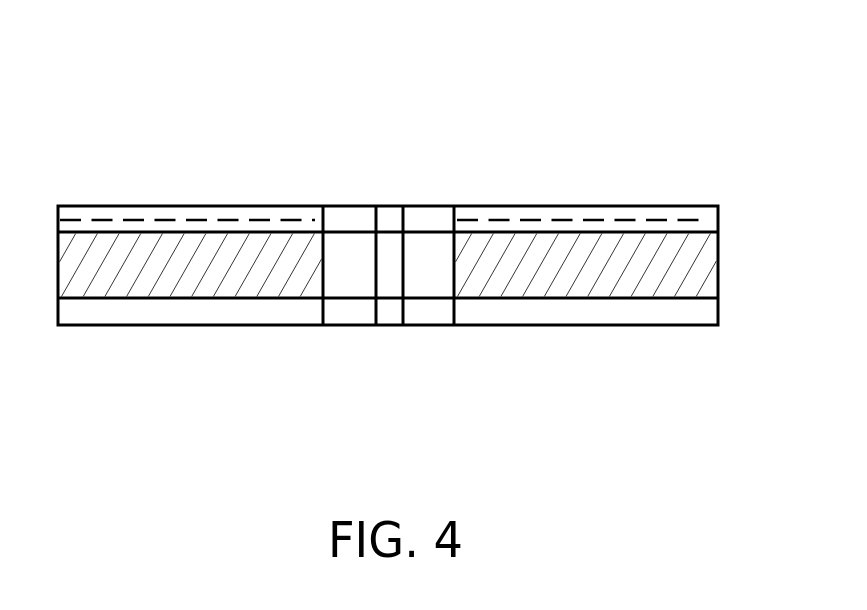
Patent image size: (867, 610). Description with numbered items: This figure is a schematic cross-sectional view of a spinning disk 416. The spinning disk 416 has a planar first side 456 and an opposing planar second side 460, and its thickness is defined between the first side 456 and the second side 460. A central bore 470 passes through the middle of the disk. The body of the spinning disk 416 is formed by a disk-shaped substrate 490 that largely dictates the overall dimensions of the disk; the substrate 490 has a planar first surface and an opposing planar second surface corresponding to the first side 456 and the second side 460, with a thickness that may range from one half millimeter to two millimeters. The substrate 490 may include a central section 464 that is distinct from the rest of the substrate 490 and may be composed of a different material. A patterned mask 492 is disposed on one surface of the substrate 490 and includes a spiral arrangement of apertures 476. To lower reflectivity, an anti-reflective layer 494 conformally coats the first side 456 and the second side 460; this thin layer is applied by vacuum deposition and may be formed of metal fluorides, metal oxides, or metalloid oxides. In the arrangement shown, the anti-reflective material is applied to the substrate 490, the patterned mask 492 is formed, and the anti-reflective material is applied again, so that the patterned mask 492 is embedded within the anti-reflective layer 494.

The spinning disk 416 is at (59, 118).
The first side 456 is at (670, 162).
The second side 460 is at (671, 364).
The central section 464 is at (350, 325).
The central bore 470 is at (388, 340).
The apertures 476 is at (257, 191).
The substrate 490 is at (512, 282).
The patterned mask 492 is at (627, 218).
The anti-reflective layer 494 is at (508, 205).